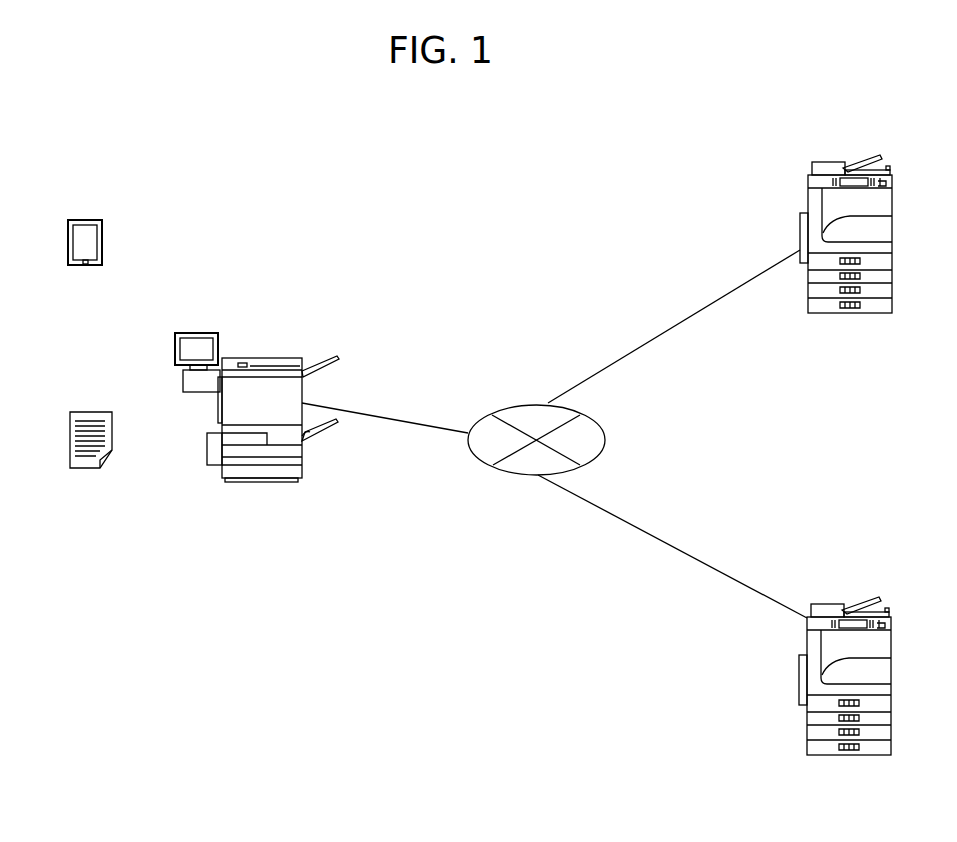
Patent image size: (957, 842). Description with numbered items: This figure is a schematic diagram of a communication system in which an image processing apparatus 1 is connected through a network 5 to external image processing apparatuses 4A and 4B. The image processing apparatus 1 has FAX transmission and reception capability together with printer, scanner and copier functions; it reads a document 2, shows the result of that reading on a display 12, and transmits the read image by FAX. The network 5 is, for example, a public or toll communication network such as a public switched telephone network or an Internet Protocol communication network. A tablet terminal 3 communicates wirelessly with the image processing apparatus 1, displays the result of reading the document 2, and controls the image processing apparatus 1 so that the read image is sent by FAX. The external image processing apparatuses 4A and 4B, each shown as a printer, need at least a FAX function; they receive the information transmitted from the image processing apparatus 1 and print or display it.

The image processing apparatus 1 is at (283, 358).
The document 2 is at (92, 412).
The tablet terminal 3 is at (82, 220).
The external image processing apparatus 4A is at (892, 203).
The external image processing apparatus 4B is at (891, 647).
The network 5 is at (505, 407).
The display 12 is at (188, 333).